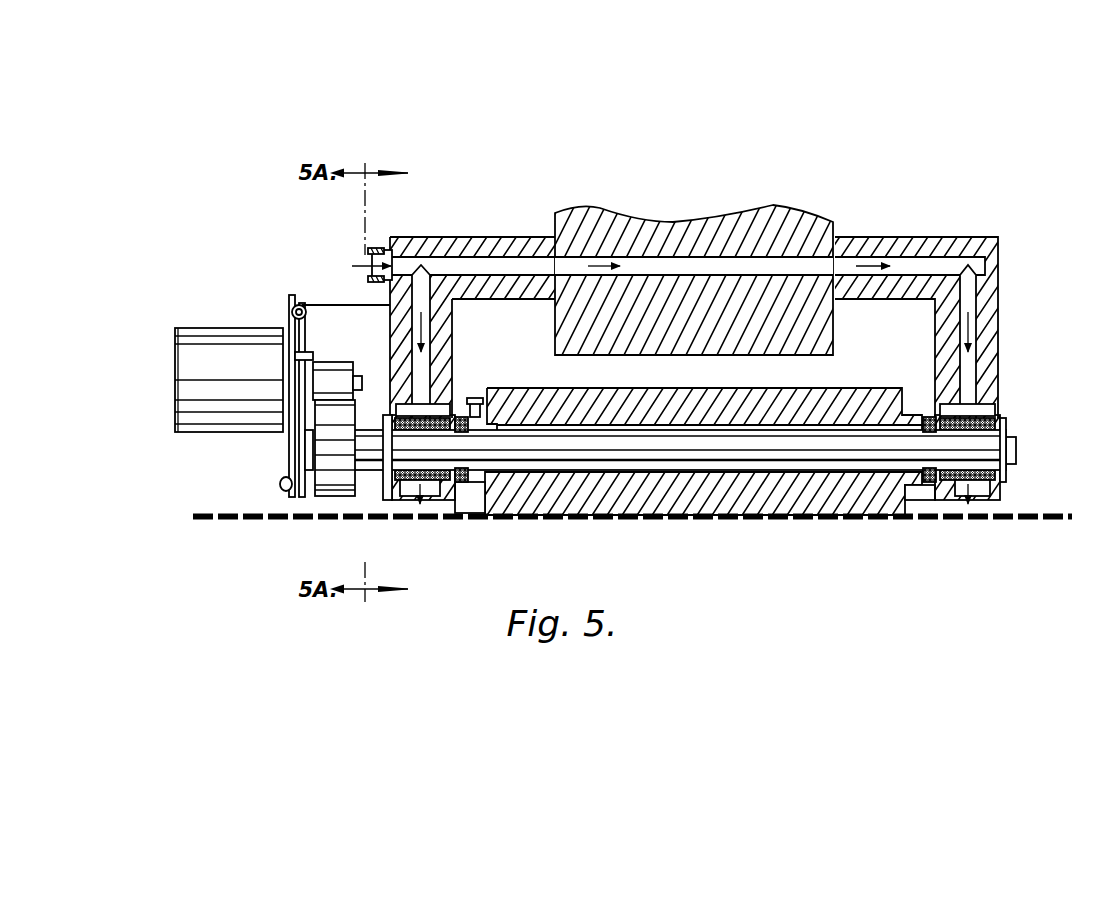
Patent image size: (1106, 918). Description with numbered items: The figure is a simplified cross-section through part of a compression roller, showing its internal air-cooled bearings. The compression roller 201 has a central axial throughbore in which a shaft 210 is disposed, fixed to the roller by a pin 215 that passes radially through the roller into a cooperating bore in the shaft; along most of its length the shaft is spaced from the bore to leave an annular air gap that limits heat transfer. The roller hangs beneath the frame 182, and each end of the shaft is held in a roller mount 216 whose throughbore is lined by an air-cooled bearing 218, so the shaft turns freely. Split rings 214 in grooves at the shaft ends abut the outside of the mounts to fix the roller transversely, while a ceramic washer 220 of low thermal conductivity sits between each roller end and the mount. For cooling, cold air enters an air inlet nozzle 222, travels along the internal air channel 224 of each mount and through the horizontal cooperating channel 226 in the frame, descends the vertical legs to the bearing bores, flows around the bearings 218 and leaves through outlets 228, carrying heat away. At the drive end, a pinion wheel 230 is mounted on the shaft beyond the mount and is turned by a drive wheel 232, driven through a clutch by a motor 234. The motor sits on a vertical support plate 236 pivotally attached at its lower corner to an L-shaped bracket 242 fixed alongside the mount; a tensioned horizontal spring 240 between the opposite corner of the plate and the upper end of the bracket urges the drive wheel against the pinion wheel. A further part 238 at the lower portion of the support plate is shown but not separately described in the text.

The frame 182 is at (762, 218).
The rotor 201 is at (743, 495).
The shaft 210 is at (1016, 450).
The split rings 214 is at (385, 418).
The pin 215 is at (472, 398).
The roller mount 216 is at (390, 298).
The air-cooled bearing 218 is at (378, 500).
The ceramic washer 220 is at (460, 500).
The air inlet nozzle 222 is at (392, 250).
The internal air channel 224 is at (458, 266).
The horizontal cooperating channel 226 is at (733, 266).
The outlets 228 is at (418, 500).
The pinion wheel 230 is at (330, 492).
The drive wheel 232 is at (322, 345).
The motor 234 is at (210, 410).
The vertical support plate 236 is at (289, 455).
The adjustment knob 238 is at (281, 486).
The spring 240 is at (290, 311).
The L-shaped bracket 242 is at (345, 320).